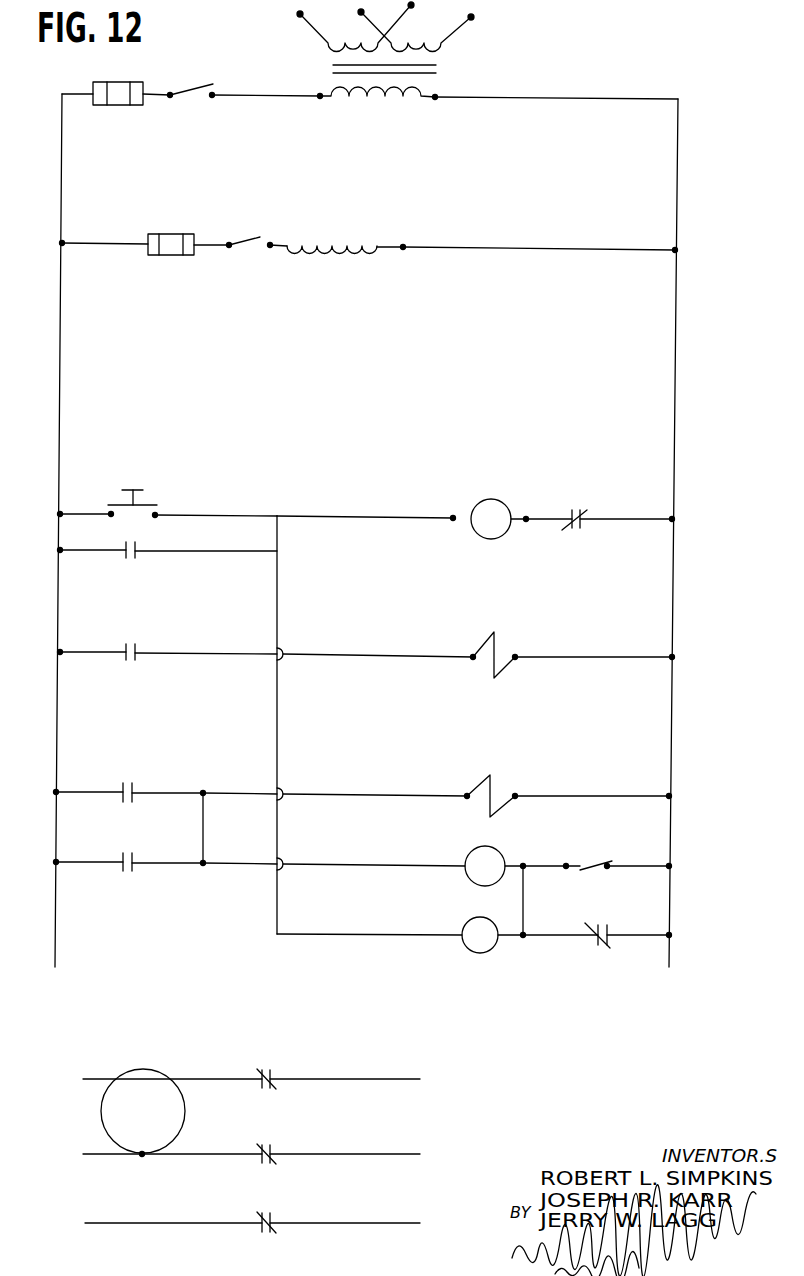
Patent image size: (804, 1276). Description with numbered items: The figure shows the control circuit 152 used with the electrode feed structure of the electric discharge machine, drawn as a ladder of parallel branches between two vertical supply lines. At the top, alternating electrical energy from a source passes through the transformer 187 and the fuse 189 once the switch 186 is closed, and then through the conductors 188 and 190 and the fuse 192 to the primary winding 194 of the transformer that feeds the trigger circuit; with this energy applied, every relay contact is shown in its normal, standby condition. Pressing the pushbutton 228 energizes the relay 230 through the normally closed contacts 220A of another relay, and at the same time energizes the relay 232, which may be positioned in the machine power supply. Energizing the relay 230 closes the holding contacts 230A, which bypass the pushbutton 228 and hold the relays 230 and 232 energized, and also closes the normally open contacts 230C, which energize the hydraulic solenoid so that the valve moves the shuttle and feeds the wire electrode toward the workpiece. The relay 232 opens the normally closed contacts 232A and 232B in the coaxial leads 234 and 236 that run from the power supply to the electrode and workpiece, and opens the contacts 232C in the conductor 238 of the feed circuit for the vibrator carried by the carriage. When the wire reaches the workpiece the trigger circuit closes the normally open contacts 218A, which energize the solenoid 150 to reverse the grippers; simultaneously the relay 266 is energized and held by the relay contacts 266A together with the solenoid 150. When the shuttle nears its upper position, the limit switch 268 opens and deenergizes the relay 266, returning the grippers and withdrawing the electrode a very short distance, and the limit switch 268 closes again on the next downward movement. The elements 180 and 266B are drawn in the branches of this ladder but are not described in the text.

The control circuit 152 is at (675, 447).
The transformer 187 is at (392, 97).
The fuse 189 is at (132, 105).
The conductor 188 is at (83, 243).
The fuse 192 is at (168, 234).
The switch 186 is at (258, 237).
The primary winding 194 is at (337, 250).
The conductor 190 is at (568, 252).
The pushbutton 228 is at (137, 490).
The relay 230 is at (504, 530).
The normally closed contacts 220A is at (578, 508).
The holding contacts 230A is at (137, 548).
The normally open contacts 230C is at (135, 660).
The thermostatic switch 180 is at (481, 650).
The normally open contacts 218A is at (133, 788).
The solenoid 150 is at (476, 788).
The relay contacts 266A is at (133, 868).
The relay 266 is at (471, 851).
The limit switch 268 is at (592, 862).
The relay 232 is at (470, 952).
The relay contact 266B is at (594, 952).
The coaxial lead 234 is at (337, 1079).
The normally closed contacts 232A is at (260, 1088).
The coaxial lead 236 is at (330, 1154).
The normally closed contacts 232B is at (260, 1163).
The conductor 238 is at (160, 1223).
The normally closed contacts 232C is at (260, 1232).